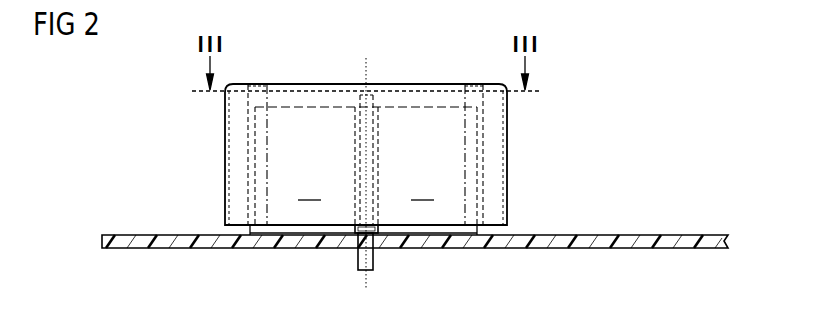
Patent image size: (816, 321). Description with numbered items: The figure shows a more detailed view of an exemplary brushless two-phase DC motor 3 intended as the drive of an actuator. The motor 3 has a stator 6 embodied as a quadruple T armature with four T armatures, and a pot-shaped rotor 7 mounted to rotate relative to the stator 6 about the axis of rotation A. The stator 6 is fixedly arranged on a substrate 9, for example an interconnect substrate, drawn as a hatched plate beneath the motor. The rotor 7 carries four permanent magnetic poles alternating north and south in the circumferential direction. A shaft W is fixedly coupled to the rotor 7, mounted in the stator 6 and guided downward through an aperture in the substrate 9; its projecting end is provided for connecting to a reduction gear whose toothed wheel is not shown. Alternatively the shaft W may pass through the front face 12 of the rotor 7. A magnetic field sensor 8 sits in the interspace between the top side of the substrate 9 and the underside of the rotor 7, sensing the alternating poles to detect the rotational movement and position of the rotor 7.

The brushless two-phase DC motor 3 is at (578, 94).
The stator 6 is at (434, 234).
The rotor 7 is at (495, 176).
The magnetic field sensor 8 is at (380, 246).
The substrate 9 is at (536, 246).
The front face 12 is at (330, 86).
The axis of rotation A is at (367, 83).
The shaft W is at (364, 256).